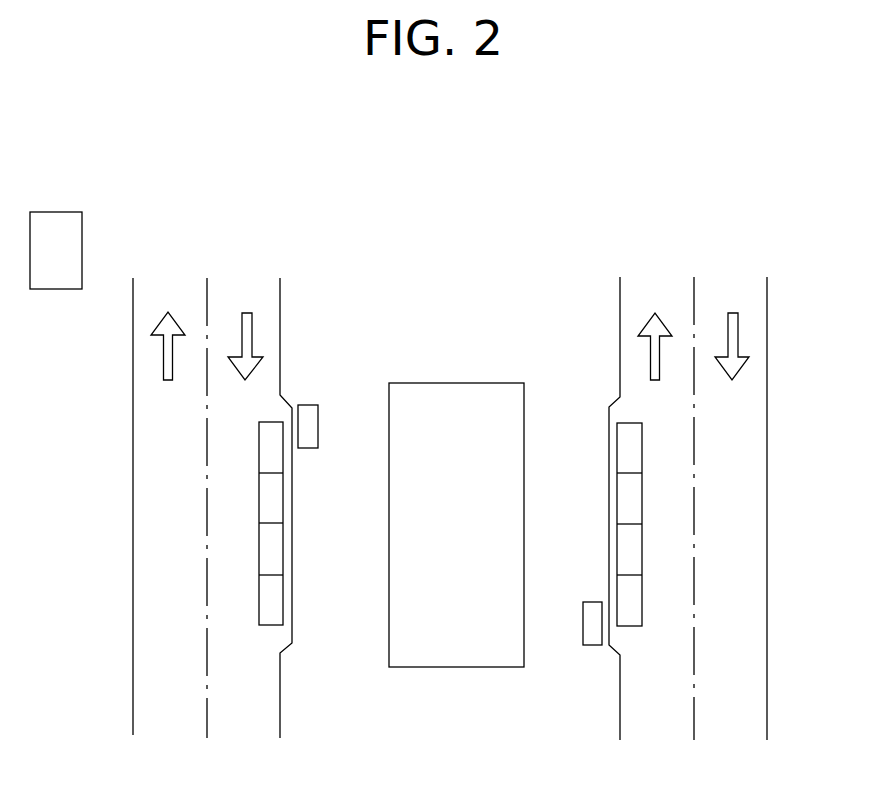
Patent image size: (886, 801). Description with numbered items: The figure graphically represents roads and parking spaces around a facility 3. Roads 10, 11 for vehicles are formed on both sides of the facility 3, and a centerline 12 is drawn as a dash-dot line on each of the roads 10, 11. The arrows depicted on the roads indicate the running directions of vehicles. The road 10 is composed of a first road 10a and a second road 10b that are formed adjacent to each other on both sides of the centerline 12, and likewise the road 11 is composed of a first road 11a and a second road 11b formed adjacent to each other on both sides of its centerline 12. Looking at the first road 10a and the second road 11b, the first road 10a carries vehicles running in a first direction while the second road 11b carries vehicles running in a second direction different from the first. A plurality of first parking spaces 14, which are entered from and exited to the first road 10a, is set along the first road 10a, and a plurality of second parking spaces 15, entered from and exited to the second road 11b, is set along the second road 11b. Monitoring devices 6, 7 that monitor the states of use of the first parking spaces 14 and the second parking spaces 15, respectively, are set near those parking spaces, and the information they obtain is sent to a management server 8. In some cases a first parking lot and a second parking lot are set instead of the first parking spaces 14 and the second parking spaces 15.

The facility 3 is at (459, 408).
The monitoring device 6 is at (593, 635).
The monitoring device 7 is at (308, 427).
The management server 8 is at (58, 230).
The road 10 is at (613, 338).
The first road 10a is at (644, 295).
The second road 10b is at (743, 295).
The road 11 is at (293, 338).
The first road 11a is at (158, 295).
The second road 11b is at (257, 295).
The centerline 12 is at (207, 470).
The first parking spaces 14 is at (632, 447).
The second parking spaces 15 is at (272, 500).